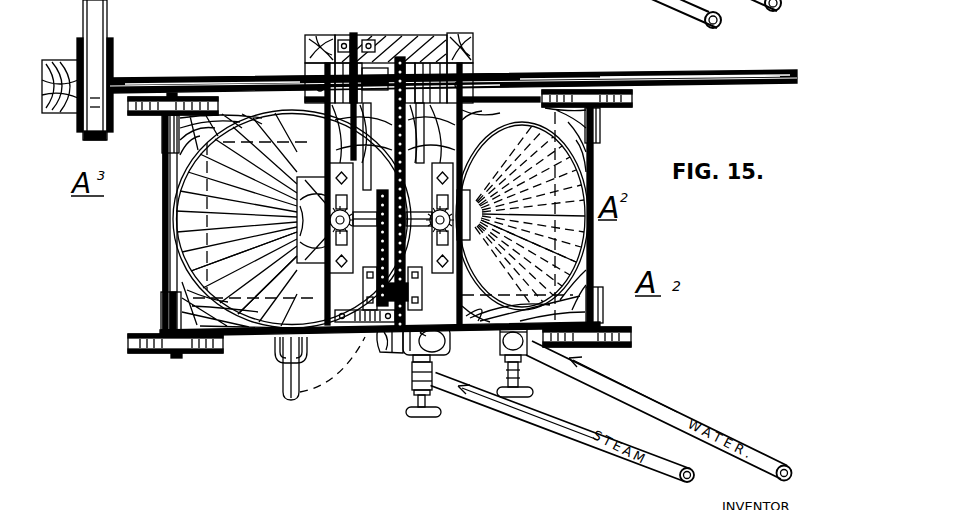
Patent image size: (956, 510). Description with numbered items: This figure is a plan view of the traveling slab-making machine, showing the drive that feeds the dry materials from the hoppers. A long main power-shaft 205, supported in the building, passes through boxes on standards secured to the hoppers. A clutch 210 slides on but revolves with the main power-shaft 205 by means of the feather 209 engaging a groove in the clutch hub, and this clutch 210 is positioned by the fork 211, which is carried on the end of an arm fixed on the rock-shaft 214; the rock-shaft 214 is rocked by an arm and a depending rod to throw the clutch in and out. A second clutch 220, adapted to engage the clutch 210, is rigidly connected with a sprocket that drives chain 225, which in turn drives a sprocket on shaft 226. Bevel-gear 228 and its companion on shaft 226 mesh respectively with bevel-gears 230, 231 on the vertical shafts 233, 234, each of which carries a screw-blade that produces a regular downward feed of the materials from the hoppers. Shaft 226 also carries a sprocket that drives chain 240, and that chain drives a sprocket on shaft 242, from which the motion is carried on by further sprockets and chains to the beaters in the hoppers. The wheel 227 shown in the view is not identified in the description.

The feather 209 is at (133, 78).
The main power-shaft 205 is at (181, 78).
The clutch 210 is at (306, 62).
The fork 211 is at (353, 34).
The clutch 220 is at (380, 217).
The chain 225 is at (419, 193).
The shaft 226 is at (312, 220).
The wheel 227 is at (292, 219).
The bevel-gear 228 is at (522, 216).
The bevel-gear 230 is at (533, 202).
The bevel-gear 231 is at (300, 235).
The vertical shaft 233 is at (528, 241).
The vertical shaft 234 is at (304, 276).
The chain 240 is at (354, 288).
The shaft 242 is at (420, 287).
The rock-shaft 214 is at (320, 380).